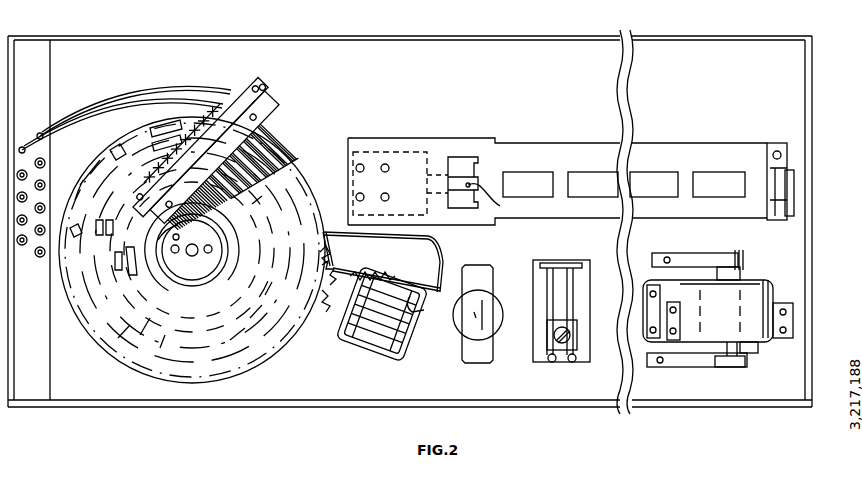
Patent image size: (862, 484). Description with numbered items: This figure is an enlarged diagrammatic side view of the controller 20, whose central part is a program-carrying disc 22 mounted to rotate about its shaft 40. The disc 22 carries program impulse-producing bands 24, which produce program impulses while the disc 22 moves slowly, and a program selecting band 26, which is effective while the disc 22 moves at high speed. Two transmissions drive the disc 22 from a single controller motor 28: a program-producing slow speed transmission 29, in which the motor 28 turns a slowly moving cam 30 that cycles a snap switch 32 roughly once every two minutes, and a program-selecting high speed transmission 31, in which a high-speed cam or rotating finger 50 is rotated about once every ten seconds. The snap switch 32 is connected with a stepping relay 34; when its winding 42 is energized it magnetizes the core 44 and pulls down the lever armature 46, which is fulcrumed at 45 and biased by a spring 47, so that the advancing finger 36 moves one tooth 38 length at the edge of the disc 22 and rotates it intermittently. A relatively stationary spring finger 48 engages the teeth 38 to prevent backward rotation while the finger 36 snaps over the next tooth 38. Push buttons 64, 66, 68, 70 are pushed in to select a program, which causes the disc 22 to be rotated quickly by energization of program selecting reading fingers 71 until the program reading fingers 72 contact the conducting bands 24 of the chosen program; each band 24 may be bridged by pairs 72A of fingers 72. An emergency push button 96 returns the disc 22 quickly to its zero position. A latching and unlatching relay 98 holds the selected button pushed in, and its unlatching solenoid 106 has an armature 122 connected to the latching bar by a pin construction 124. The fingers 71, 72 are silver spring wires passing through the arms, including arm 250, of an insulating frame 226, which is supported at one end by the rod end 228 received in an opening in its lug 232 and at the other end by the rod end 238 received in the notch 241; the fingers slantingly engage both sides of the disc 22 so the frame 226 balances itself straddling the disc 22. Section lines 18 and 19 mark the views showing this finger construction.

The section line 18- 18 is at (258, 53).
The section line 19- 19 is at (236, 54).
The controller 20 is at (204, 427).
The program-carrying member or disc 22 is at (105, 363).
The program impulse-producing zones or bands 24 is at (100, 245).
The program selecting zone or band 26 is at (152, 235).
The controller motor 28 is at (767, 300).
The program-producing slow speed transmission 29 is at (748, 372).
The slowly moving cam 30 is at (727, 362).
The program-selecting high speed transmission 31 is at (737, 243).
The snap switch 32 is at (668, 374).
The stepping relay 34 is at (382, 307).
The advancing finger 36 is at (322, 277).
The tooth 38 is at (318, 300).
The shaft 40 is at (192, 250).
The winding 42 is at (386, 330).
The core 44 is at (392, 285).
The fulcrum 45 is at (418, 306).
The lever armature 46 is at (363, 274).
The spring 47 is at (437, 285).
The stationary spring finger 48 is at (323, 258).
The high-speed cam or rotating finger 50 is at (738, 259).
The push button 64 is at (528, 180).
The push button 66 is at (597, 178).
The push button 68 is at (648, 180).
The push button 70 is at (715, 177).
The program selecting reading fingers 71 is at (172, 240).
The program reading fingers 72 is at (281, 133).
The pairs of fingers 72A is at (252, 204).
The emergency push button 96 is at (487, 310).
The latching and unlatching relay 98 is at (402, 135).
The unlatching solenoid 106 is at (427, 142).
The armature 122 is at (460, 173).
The pin construction 124 is at (499, 199).
The insulating frame 226 is at (230, 88).
The end of rod 228 is at (138, 198).
The lug 232 is at (133, 203).
The end of rod 238 is at (264, 92).
The notch 241 is at (262, 84).
The arm 250 is at (262, 108).